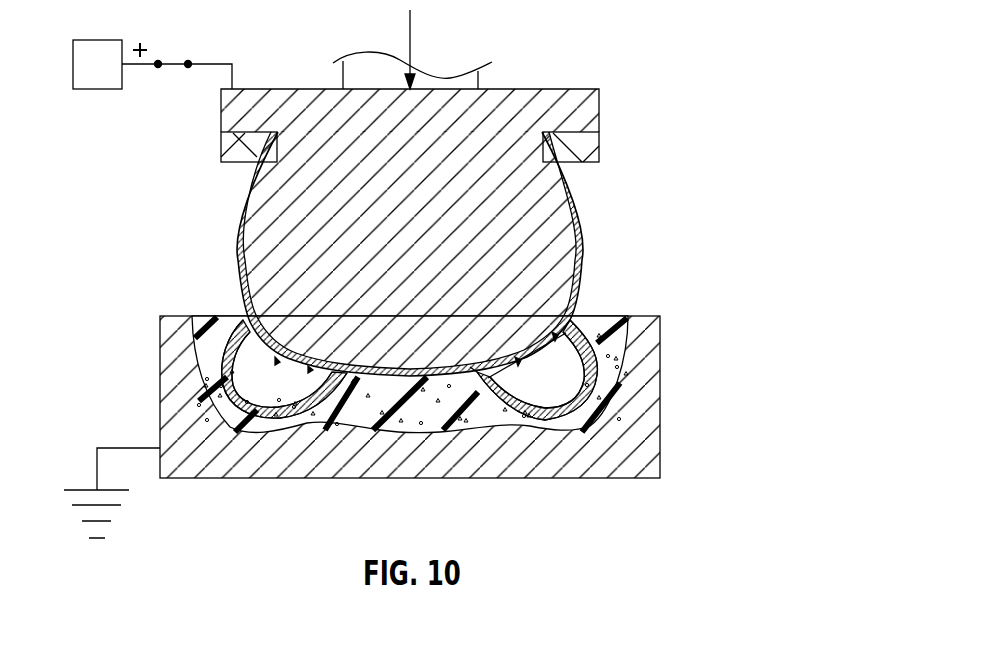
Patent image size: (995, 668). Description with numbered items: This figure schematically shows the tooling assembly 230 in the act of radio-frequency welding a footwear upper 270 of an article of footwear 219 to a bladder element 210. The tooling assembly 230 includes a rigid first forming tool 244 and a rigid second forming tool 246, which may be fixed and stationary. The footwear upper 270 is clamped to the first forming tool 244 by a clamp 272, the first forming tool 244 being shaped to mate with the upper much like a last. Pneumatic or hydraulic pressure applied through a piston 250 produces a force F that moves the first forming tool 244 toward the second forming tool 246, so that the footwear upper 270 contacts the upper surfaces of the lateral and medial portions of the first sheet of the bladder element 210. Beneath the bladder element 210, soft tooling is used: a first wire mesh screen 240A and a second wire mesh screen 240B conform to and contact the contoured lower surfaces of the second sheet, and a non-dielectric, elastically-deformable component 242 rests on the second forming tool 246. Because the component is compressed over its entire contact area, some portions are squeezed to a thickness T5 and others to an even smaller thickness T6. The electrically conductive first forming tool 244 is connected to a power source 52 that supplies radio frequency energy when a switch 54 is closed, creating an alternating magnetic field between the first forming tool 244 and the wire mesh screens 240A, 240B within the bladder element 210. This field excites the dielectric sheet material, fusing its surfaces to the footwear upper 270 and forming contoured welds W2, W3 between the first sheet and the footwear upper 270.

The power source 52 is at (98, 46).
The switch 54 is at (176, 41).
The force F is at (414, 47).
The piston 250 is at (482, 77).
The tooling assembly 230 is at (450, 139).
The clamp 272 is at (220, 147).
The first forming tool 244 is at (267, 243).
The footwear upper 270 is at (587, 242).
The article of footwear 219 is at (409, 253).
The bladder element 210 is at (469, 391).
The second forming tool 246 is at (652, 462).
The non-dielectric, elastically-deformable component 242 is at (618, 380).
The first wire mesh screen 240A is at (242, 320).
The second wire mesh screen 240B is at (590, 313).
The contoured weld W2 is at (291, 338).
The contoured weld W3 is at (497, 357).
The thickness T5 is at (412, 379).
The thickness T6 is at (266, 424).